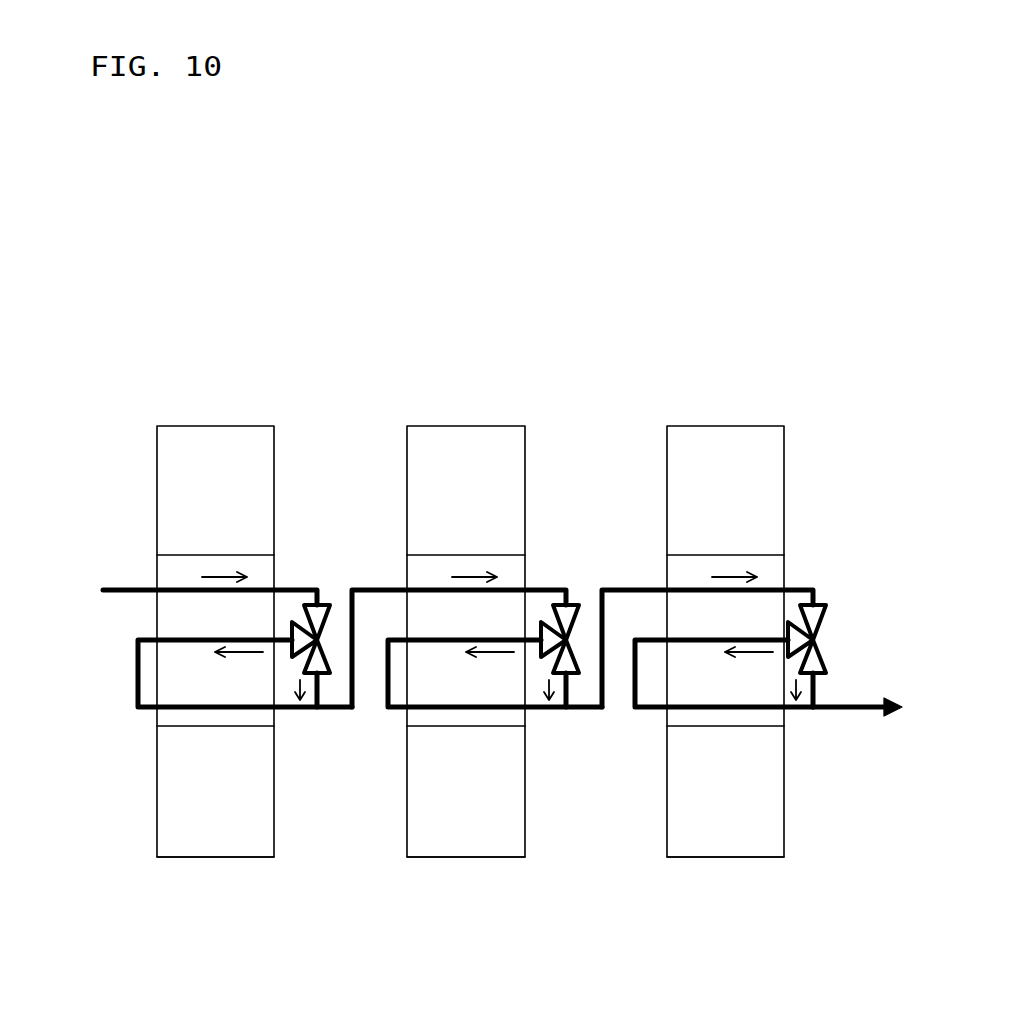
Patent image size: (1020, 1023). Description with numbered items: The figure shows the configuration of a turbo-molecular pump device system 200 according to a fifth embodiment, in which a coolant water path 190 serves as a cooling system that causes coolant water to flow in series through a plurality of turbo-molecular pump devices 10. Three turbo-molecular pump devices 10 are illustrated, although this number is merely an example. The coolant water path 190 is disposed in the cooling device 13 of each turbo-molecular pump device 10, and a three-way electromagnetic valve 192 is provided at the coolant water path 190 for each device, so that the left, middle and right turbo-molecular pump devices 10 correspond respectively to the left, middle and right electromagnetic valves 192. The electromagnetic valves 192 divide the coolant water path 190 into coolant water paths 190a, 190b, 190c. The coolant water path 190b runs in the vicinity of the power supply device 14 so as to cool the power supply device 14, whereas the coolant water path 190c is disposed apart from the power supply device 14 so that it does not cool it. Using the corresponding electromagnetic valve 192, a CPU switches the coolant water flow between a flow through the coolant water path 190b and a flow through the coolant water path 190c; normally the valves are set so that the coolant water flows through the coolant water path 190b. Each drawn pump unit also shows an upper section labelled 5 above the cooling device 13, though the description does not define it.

The turbo-molecular pump device system 200 is at (658, 217).
The turbo-molecular pump device 10 is at (225, 426).
The anode separator 5 is at (178, 497).
The cooling device 13 is at (167, 573).
The power supply device 14 is at (224, 846).
The coolant water path 190 is at (850, 710).
The coolant water path 190a is at (132, 595).
The coolant water path 190b is at (137, 683).
The coolant water path 190c is at (322, 683).
The three-way electromagnetic valve 192 is at (317, 605).